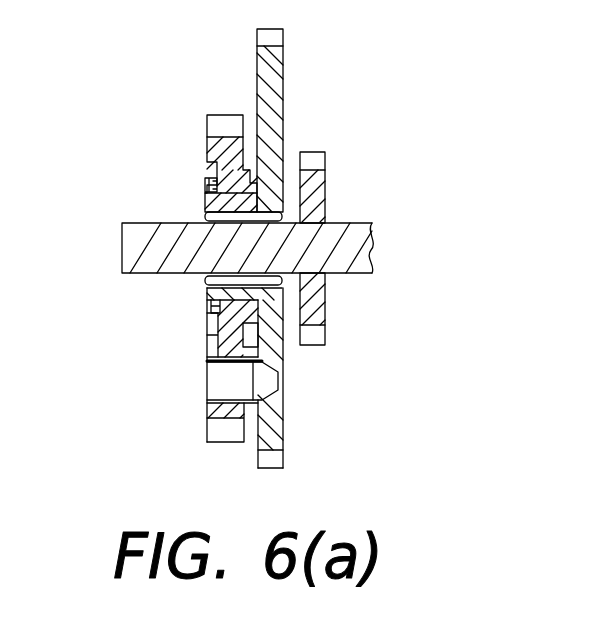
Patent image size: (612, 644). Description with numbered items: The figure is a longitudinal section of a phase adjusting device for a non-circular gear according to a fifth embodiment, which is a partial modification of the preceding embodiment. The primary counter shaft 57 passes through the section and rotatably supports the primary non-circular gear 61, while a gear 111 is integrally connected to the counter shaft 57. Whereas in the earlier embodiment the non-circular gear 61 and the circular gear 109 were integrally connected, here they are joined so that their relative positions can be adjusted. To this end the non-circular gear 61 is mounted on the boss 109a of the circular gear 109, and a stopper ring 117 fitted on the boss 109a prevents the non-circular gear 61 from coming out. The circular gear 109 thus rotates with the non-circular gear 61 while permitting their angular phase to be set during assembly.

The circular gear 109 is at (278, 72).
The boss 109a is at (208, 200).
The non-circular gear 61 is at (208, 150).
The gear 111 is at (315, 198).
The counter shaft 57 is at (145, 266).
The stopper ring 117 is at (209, 313).